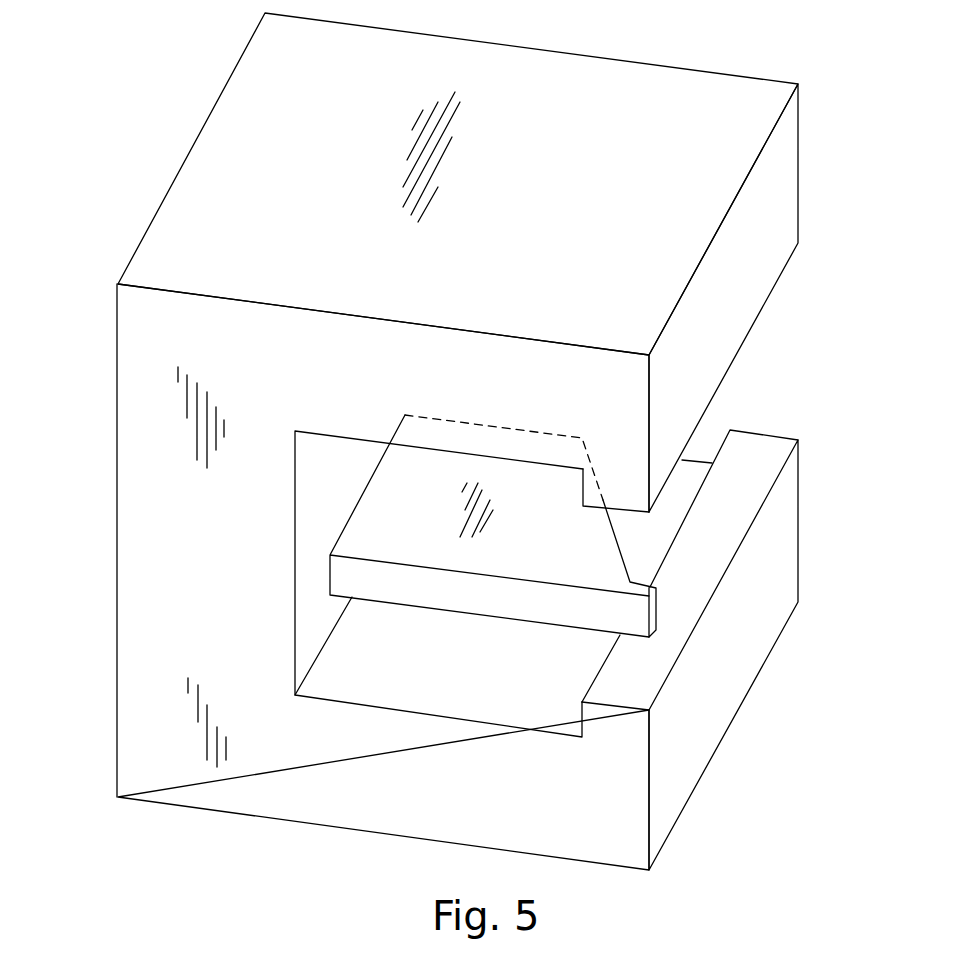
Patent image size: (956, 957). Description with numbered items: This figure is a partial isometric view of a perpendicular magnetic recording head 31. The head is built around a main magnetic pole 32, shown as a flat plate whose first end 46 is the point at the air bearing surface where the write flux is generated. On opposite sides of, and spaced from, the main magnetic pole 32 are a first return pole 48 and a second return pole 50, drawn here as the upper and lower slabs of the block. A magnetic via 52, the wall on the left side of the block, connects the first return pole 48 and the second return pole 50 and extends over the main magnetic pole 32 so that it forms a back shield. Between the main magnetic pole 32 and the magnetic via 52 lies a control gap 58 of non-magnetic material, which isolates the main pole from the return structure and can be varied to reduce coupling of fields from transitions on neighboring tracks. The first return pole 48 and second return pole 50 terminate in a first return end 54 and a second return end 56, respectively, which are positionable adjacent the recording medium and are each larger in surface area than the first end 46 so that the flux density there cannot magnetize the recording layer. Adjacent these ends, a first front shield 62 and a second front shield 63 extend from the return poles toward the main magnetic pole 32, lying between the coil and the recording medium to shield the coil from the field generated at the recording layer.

The perpendicular magnetic recording head 31 is at (160, 167).
The first return pole 48 is at (405, 352).
The first return end 54 is at (788, 202).
The second return end 56 is at (790, 575).
The second return pole 50 is at (382, 815).
The magnetic via 52 is at (138, 530).
The control gap 58 is at (315, 578).
The first front shield 62 is at (625, 485).
The second front shield 63 is at (637, 728).
The main magnetic pole 32 is at (443, 597).
The first end 46 is at (656, 612).